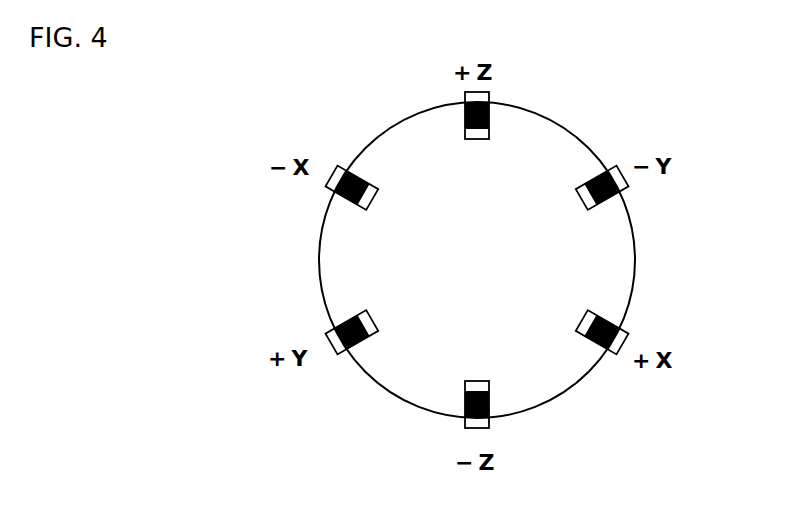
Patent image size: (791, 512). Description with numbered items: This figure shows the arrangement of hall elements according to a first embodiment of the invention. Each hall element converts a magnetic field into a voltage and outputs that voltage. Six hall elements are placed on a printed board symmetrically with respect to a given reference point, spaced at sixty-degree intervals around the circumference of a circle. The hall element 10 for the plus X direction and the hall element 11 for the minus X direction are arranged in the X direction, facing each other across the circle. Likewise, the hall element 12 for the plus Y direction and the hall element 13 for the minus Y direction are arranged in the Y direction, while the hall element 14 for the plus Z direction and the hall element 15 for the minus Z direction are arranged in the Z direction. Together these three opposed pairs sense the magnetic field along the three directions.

The hall element (+X direction) 10 is at (618, 327).
The hall element (−X direction) 11 is at (325, 190).
The hall element (+Y direction) 12 is at (338, 355).
The hall element (−Y direction) 13 is at (622, 198).
The hall element (+Z direction) 14 is at (490, 105).
The hall element (−Z direction) 15 is at (492, 415).